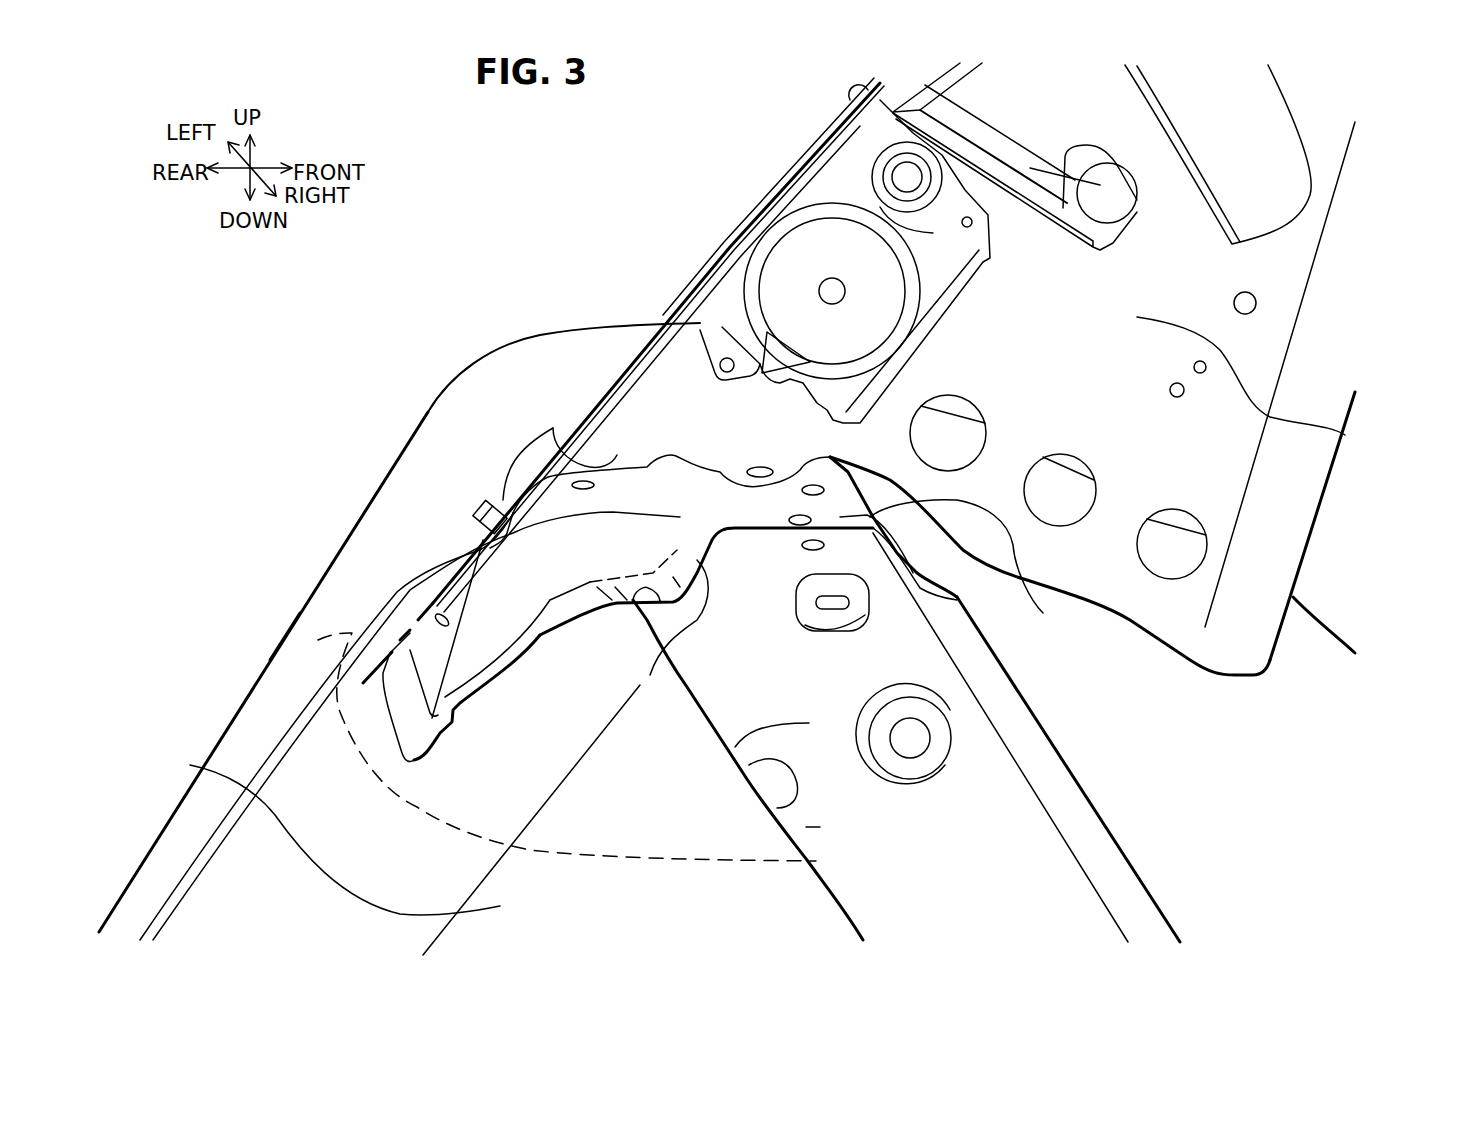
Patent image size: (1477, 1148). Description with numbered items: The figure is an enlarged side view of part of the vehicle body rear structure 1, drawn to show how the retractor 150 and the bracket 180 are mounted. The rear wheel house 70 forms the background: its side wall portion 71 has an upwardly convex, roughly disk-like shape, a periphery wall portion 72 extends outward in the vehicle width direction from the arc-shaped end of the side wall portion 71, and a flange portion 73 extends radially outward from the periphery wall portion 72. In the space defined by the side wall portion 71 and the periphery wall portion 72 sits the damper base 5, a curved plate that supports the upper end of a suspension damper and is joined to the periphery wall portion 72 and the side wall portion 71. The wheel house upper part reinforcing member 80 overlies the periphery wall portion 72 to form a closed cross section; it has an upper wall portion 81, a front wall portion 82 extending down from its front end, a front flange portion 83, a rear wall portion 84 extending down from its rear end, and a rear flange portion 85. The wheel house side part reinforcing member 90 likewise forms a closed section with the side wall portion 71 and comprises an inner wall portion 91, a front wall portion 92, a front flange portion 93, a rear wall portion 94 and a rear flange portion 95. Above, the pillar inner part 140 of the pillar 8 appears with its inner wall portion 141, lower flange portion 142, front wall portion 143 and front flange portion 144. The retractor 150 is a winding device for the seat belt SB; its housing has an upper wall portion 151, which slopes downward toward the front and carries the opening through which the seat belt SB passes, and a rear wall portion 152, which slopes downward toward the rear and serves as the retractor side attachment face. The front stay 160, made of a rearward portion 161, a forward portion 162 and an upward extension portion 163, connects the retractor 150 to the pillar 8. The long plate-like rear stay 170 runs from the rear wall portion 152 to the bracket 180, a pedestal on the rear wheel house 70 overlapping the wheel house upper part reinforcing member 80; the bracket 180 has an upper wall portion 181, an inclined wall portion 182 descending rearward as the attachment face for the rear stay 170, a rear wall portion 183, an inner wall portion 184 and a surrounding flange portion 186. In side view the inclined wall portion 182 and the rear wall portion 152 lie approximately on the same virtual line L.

The vehicle body rear structure 1 is at (478, 232).
The damper base 5 is at (408, 797).
The pillar 8 is at (1152, 370).
The rear wheel house 70 is at (203, 650).
The side wall portion 71 is at (248, 795).
The periphery wall portion 72 is at (333, 750).
The flange portion 73 is at (255, 741).
The virtual line L is at (305, 644).
The wheel house upper part reinforcing member 80 is at (1057, 638).
The upper wall portion 81 is at (980, 587).
The front wall portion 82 is at (1043, 613).
The front flange portion 83 is at (927, 583).
The rear wall portion 84 is at (708, 600).
The rear flange portion 85 is at (632, 603).
The wheel house side part reinforcing member 90 is at (1248, 845).
The inner wall portion 91 is at (1007, 833).
The front wall portion 92 is at (1100, 882).
The front flange portion 93 is at (1140, 902).
The rear wall portion 94 is at (735, 747).
The rear flange portion 95 is at (806, 827).
The pillar inner part 140 is at (1375, 468).
The inner wall portion 141 is at (1340, 435).
The lower flange portion 142 is at (1160, 623).
The front wall portion 143 is at (1260, 472).
The front flange portion 144 is at (1280, 547).
The retractor 150 is at (670, 191).
The upper wall portion 151 is at (810, 145).
The rear wall portion 152 is at (765, 215).
The front stay 160 is at (763, 52).
The rearward portion 161 is at (828, 119).
The forward portion 162 is at (909, 127).
The extension portion 163 is at (918, 112).
The rear stay 170 is at (552, 428).
The bracket 180 is at (340, 380).
The upper wall portion 181 is at (623, 497).
The inclined wall portion 182 is at (498, 510).
The rear wall portion 183 is at (440, 615).
The inner wall portion 184 is at (475, 554).
The flange portion 186 is at (395, 648).
The seat belt SB is at (955, 82).